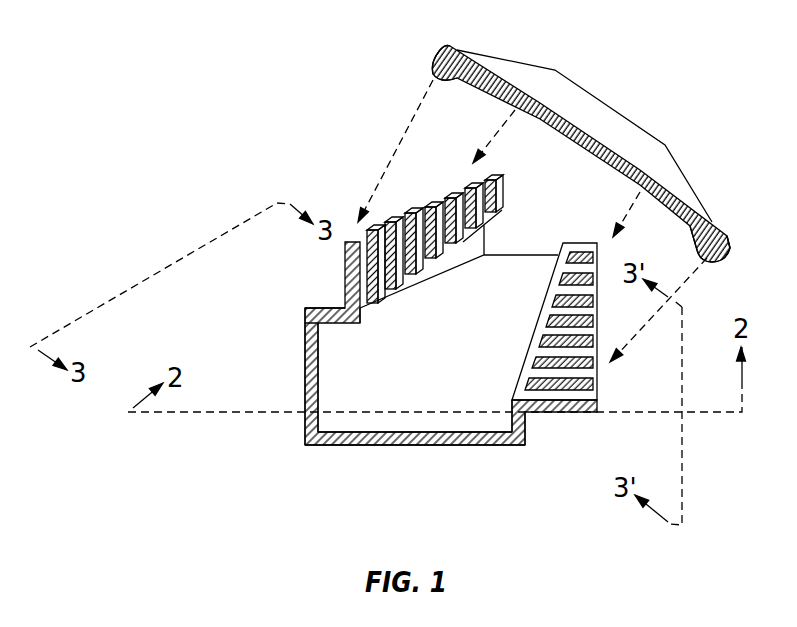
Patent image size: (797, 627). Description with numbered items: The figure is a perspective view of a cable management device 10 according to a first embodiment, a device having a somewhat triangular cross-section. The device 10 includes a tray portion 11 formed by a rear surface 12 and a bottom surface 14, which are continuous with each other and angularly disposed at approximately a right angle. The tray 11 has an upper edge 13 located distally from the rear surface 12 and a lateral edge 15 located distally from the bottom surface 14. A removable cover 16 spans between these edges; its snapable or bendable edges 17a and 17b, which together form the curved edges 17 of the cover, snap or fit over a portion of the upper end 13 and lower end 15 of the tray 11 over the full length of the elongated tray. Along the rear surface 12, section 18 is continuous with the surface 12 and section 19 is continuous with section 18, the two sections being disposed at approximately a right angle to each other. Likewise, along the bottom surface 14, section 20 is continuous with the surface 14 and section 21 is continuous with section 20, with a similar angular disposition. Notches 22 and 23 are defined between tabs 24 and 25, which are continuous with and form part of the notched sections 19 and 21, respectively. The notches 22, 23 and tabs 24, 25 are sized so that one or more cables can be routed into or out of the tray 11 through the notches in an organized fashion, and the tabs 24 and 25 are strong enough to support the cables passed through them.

The cable management device 10 is at (180, 78).
The tray portion 11 is at (307, 442).
The rear surface 12 is at (305, 363).
The upper edge 13 is at (424, 212).
The bottom surface 14 is at (387, 445).
The lateral edge 15 is at (597, 390).
The removable cover 16 is at (610, 118).
The cover edge 17 is at (435, 65).
The snapable or bendable edge 17a is at (433, 77).
The snapable or bendable edge 17b is at (703, 260).
The section 18 is at (337, 302).
The notched section 19 is at (362, 311).
The section 20 is at (530, 423).
The notched section 21 is at (513, 398).
The notch 22 is at (500, 192).
The notch 23 is at (568, 300).
The tab 24 is at (418, 227).
The tab 25 is at (582, 330).